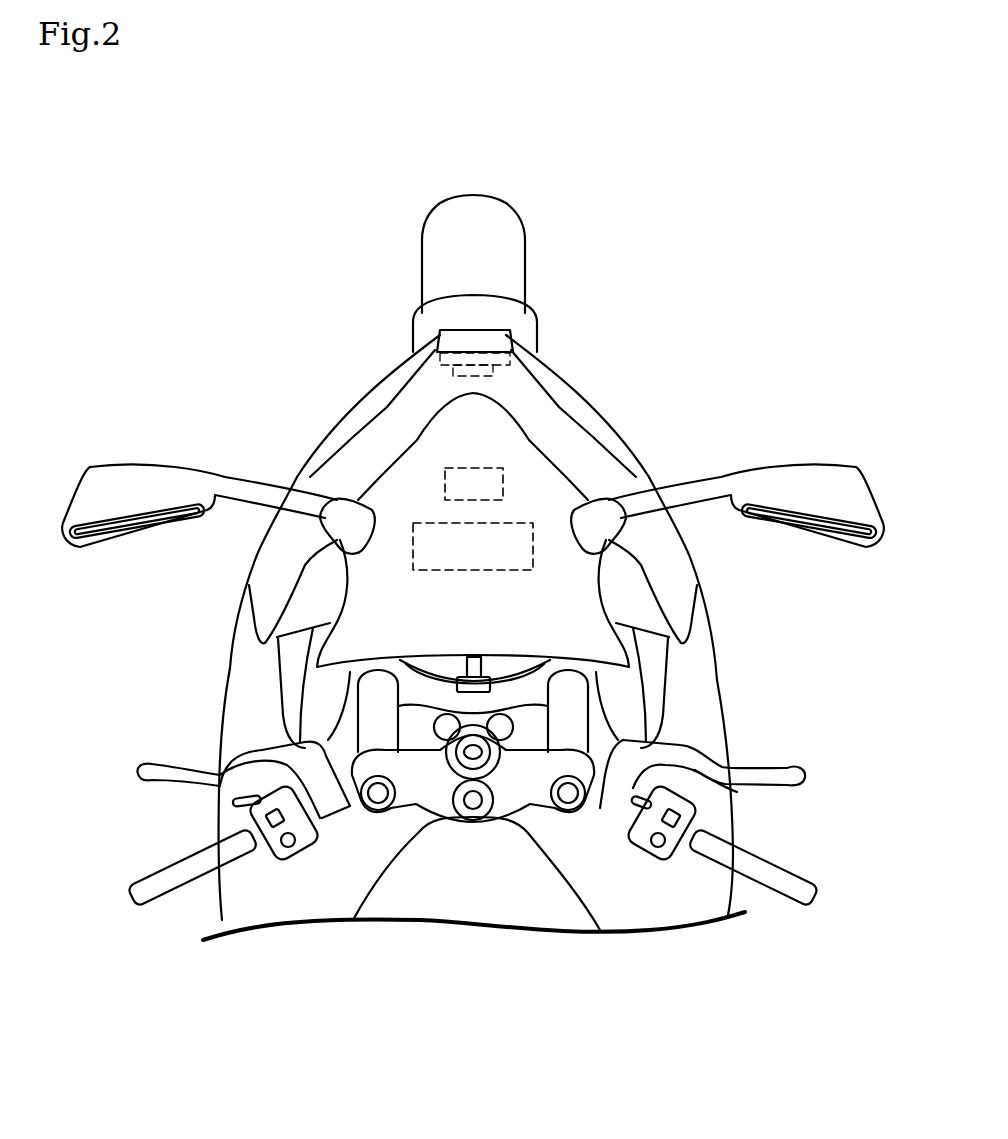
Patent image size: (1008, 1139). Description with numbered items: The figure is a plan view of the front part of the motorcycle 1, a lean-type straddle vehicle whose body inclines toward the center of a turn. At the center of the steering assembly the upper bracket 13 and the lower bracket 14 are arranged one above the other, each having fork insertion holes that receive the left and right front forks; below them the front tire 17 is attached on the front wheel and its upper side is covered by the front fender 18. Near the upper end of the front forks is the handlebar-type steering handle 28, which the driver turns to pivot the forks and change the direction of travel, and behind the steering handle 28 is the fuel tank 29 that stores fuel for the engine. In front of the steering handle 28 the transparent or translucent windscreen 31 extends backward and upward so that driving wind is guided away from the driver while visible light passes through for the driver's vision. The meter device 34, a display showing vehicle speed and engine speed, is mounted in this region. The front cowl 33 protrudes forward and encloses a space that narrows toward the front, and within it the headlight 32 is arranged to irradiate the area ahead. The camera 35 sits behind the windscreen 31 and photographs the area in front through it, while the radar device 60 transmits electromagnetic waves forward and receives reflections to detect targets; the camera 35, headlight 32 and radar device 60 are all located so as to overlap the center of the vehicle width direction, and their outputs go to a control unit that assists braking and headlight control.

The motorcycle 1 is at (84, 161).
The upper bracket 13 is at (427, 800).
The lower bracket 14 is at (527, 703).
The front tire 17 is at (480, 198).
The front fender 18 is at (420, 328).
The steering handle 28 is at (289, 895).
The fuel tank 29 is at (573, 908).
The windscreen 31 is at (418, 460).
The headlight 32 is at (482, 335).
The front cowl 33 is at (355, 373).
The meter device 34 is at (526, 523).
The camera 35 is at (500, 468).
The radar device 60 is at (516, 372).